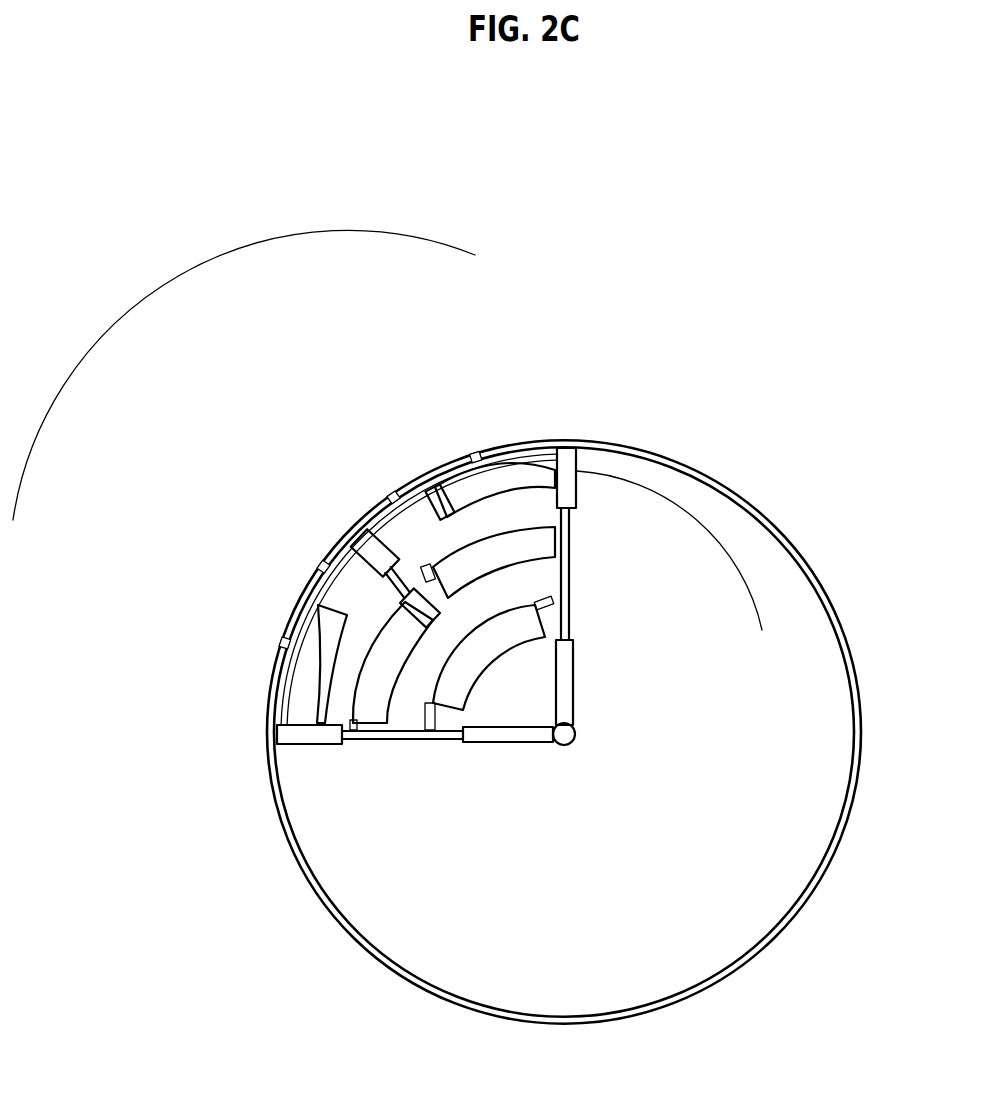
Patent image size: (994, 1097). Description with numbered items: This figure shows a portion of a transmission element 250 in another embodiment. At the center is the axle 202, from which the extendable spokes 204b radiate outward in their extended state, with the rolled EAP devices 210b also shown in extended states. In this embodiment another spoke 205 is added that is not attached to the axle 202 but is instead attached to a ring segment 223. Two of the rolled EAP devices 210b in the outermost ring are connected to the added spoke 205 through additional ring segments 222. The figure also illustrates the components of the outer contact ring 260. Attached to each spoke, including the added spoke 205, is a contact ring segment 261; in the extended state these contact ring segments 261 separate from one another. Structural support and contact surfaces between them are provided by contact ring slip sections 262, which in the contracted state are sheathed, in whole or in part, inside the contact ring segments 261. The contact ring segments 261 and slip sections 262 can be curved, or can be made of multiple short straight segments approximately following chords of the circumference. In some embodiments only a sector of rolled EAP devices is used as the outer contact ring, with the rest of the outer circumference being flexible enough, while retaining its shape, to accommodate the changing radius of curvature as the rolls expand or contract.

The transmission element 250 is at (619, 162).
The outer contact ring 260 is at (157, 283).
The contact ring segment 261 is at (157, 650).
The contact ring slip section 262 is at (302, 608).
The spoke 205 is at (367, 530).
The spokes 204b is at (565, 695).
The axle 202 is at (553, 742).
The ring segment 223 is at (720, 598).
The ring segments 222 is at (548, 600).
The rolled EAP devices 210b is at (415, 677).